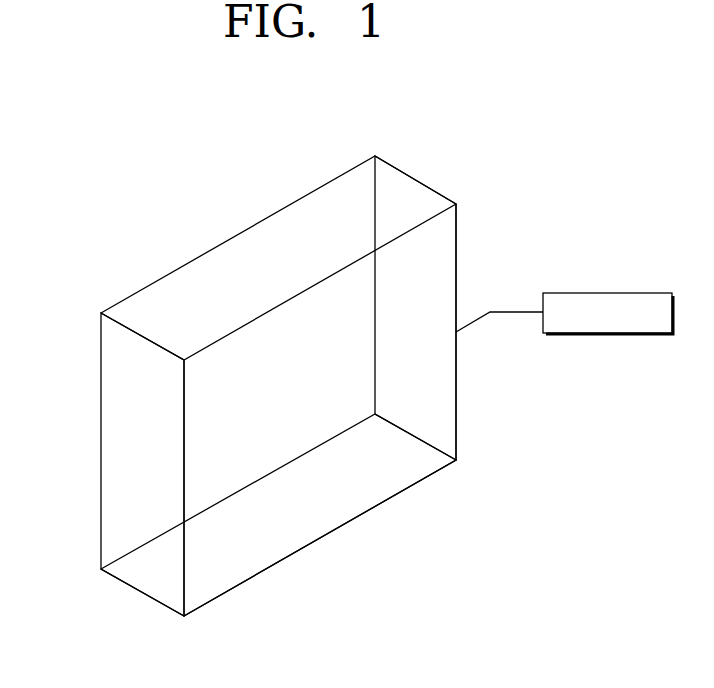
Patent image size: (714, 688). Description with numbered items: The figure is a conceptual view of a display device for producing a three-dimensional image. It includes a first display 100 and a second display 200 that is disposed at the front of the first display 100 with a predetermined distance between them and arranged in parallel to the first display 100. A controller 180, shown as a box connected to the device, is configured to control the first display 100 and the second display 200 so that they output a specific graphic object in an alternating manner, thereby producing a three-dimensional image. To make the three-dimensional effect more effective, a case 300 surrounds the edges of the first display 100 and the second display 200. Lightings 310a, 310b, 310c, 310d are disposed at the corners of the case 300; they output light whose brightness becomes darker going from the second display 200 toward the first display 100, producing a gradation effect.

The first display 100 is at (281, 380).
The controller 180 is at (607, 293).
The second display 200 is at (325, 523).
The case 300 is at (281, 380).
The lighting 310a is at (433, 189).
The lighting 310b is at (430, 442).
The lighting 310c is at (142, 597).
The lighting 310d is at (135, 337).